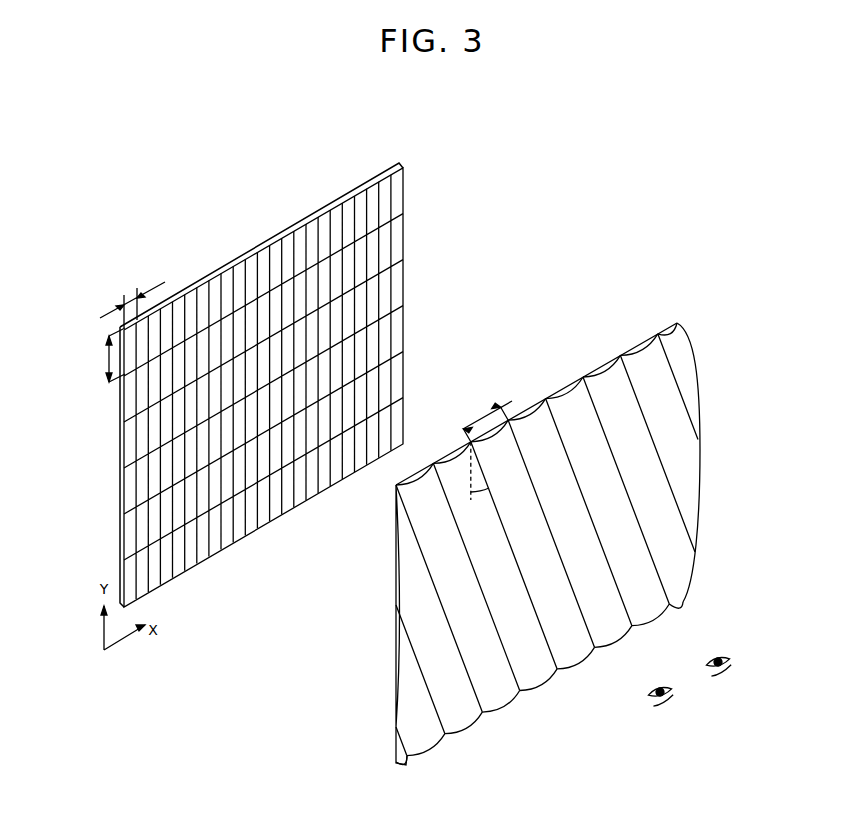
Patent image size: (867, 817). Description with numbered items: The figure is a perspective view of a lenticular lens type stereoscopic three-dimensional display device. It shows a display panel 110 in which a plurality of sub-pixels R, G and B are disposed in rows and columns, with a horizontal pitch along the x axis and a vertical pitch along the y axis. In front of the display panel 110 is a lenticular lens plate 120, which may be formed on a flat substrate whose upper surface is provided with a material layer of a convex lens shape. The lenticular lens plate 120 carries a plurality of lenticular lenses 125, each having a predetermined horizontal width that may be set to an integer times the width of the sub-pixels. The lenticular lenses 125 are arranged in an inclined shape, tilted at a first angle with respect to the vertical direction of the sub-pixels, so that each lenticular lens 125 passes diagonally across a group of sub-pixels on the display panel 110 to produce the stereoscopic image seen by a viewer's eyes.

The display panel 110 is at (415, 192).
The lenticular lens plate 120 is at (575, 542).
The lenticular lens 125 is at (605, 368).